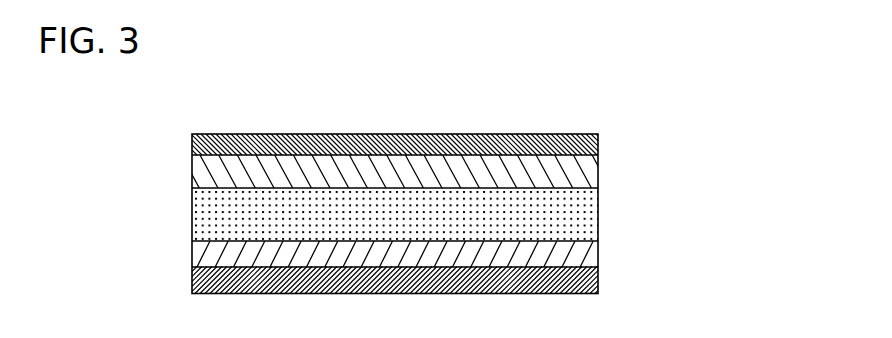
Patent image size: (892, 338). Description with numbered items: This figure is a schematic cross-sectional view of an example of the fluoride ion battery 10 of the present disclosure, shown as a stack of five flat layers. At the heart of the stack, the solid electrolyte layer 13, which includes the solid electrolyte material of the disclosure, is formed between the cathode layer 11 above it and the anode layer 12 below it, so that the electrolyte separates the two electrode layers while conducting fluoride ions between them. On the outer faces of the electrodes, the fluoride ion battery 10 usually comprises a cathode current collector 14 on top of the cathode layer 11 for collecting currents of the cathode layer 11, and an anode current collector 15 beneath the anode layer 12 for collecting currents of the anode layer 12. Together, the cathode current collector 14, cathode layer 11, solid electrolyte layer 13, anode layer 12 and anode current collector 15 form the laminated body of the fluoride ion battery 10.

The fluoride ion battery 10 is at (718, 131).
The cathode layer 11 is at (582, 180).
The anode layer 12 is at (580, 257).
The solid electrolyte layer 13 is at (573, 220).
The cathode current collector 14 is at (583, 150).
The anode current collector 15 is at (588, 286).